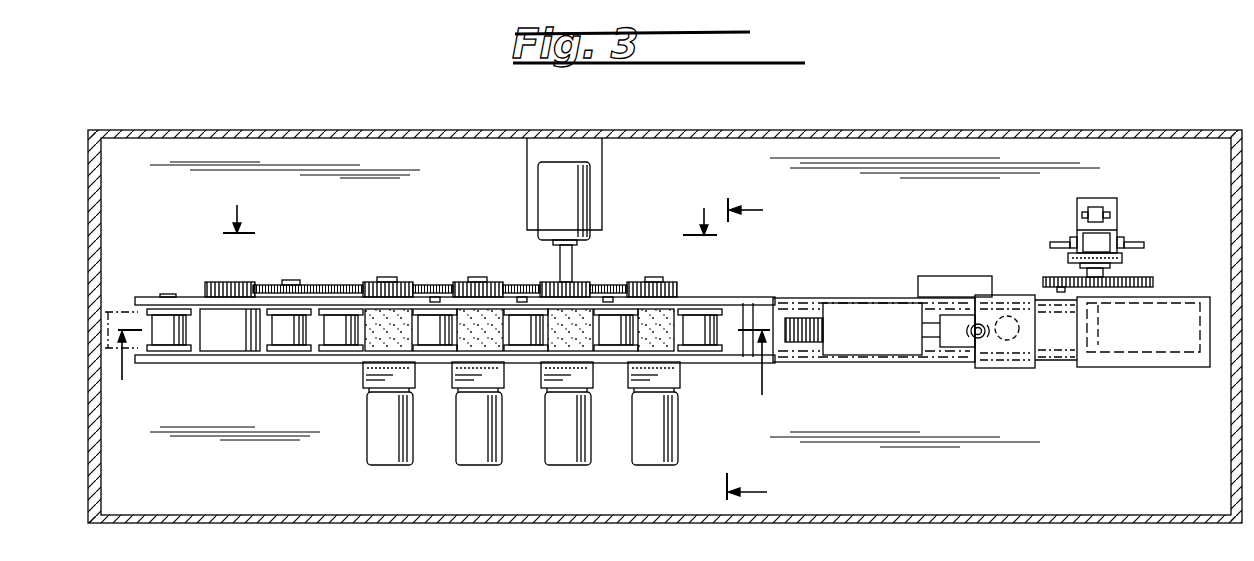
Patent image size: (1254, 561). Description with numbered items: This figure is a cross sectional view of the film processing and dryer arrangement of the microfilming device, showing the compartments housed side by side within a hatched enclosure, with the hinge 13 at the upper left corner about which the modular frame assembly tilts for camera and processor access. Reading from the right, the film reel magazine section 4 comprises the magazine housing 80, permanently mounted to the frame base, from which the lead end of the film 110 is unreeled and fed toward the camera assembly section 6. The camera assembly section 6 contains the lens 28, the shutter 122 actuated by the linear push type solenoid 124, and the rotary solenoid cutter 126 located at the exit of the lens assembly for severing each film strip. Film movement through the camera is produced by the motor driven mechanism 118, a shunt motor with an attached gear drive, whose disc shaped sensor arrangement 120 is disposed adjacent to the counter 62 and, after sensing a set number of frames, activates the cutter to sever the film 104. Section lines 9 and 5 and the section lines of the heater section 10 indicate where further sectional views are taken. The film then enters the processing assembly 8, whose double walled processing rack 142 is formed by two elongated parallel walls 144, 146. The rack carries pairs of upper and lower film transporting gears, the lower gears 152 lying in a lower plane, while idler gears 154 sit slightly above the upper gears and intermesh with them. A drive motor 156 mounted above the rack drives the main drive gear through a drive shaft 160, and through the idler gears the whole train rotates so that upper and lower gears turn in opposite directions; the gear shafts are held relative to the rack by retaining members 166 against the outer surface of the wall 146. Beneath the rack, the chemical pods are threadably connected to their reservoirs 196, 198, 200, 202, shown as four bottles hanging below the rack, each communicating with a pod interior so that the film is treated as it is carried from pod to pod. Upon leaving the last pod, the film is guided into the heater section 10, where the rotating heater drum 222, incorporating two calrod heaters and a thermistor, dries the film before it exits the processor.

The hinge 13 is at (103, 157).
The rack wall 144 is at (151, 296).
The heater section 10 is at (222, 292).
The idler gear 154 is at (372, 284).
The lower film transporting gear 152 is at (528, 286).
The drive motor 156 is at (589, 173).
The drive shaft 160 is at (574, 262).
The section line 9 is at (457, 207).
The section line 5 is at (437, 369).
The processing assembly 8 is at (730, 290).
The processing rack 142 is at (758, 302).
The camera assembly section 6 is at (906, 289).
The solenoid 124 is at (876, 340).
The rotary solenoid cutter 126 is at (946, 283).
The shutter 122 is at (1018, 370).
The lens 28 is at (976, 338).
The lead end of the film 110 is at (1092, 350).
The magazine housing 80 is at (1152, 369).
The film reel magazine section 4 is at (1187, 369).
The film 104 is at (1168, 317).
The motor driven mechanism 118 is at (1089, 197).
The counter 62 is at (1111, 207).
The sensor arrangement 120 is at (1142, 247).
The rack wall 146 is at (170, 366).
The heater drum 222 is at (211, 338).
The retaining member 166 is at (340, 366).
The reservoir 202 is at (392, 465).
The reservoir 200 is at (479, 465).
The reservoir 198 is at (565, 465).
The reservoir 196 is at (653, 465).